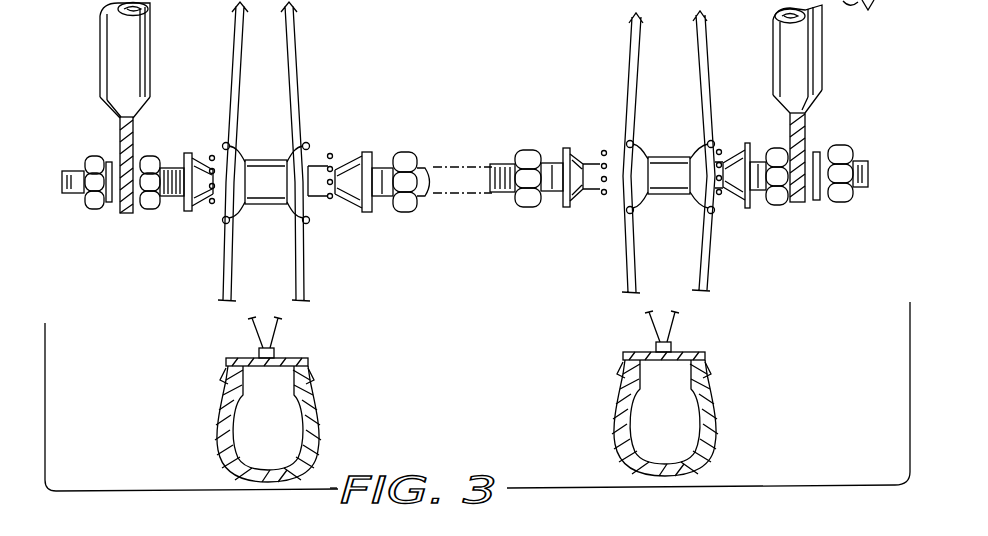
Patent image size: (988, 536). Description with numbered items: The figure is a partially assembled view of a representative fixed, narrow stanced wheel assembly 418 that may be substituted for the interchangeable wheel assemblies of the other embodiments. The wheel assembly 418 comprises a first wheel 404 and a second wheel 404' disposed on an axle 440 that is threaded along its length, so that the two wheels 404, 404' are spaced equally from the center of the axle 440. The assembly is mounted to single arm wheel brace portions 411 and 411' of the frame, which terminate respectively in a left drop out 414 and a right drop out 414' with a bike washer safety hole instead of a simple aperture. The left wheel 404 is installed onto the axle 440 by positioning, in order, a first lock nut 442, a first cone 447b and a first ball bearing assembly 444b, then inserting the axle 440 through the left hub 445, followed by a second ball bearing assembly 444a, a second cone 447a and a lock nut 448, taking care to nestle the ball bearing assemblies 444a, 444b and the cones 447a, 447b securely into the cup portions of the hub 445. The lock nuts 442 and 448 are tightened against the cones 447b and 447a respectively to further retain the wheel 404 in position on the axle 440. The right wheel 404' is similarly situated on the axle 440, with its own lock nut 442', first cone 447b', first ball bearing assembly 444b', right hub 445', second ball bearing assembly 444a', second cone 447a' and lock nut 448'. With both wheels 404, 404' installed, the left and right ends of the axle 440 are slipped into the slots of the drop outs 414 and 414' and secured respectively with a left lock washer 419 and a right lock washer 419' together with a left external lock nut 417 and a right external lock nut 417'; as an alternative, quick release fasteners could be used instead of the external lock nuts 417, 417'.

The first wheel 404 is at (310, 399).
The second wheel 404' is at (620, 393).
The left wheel brace portion 411 is at (101, 61).
The right wheel brace portion 411' is at (829, 59).
The left drop out 414 is at (150, 188).
The right drop out 414' is at (787, 175).
The left external lock nut 417 is at (84, 210).
The right external lock nut 417' is at (857, 204).
The fixed wheel assembly 418 is at (469, 300).
The left lock washer 419 is at (105, 228).
The right lock washer 419' is at (793, 251).
The axle 440 is at (462, 188).
The first lock nut 442 is at (425, 161).
The first lock nut of right wheel 442' is at (532, 146).
The second ball bearing assembly 444a is at (189, 155).
The second ball bearing assembly of right wheel 444a' is at (745, 112).
The first ball bearing assembly 444b is at (365, 127).
The first ball bearing assembly of right wheel 444b' is at (584, 115).
The left hub 445 is at (266, 166).
The right hub 445' is at (671, 146).
The second cone 447a is at (181, 226).
The second cone of right wheel 447a' is at (758, 219).
The first cone 447b is at (391, 149).
The first cone of right wheel 447b' is at (540, 202).
The lock nut 448 is at (176, 136).
The lock nut of right wheel 448' is at (765, 156).